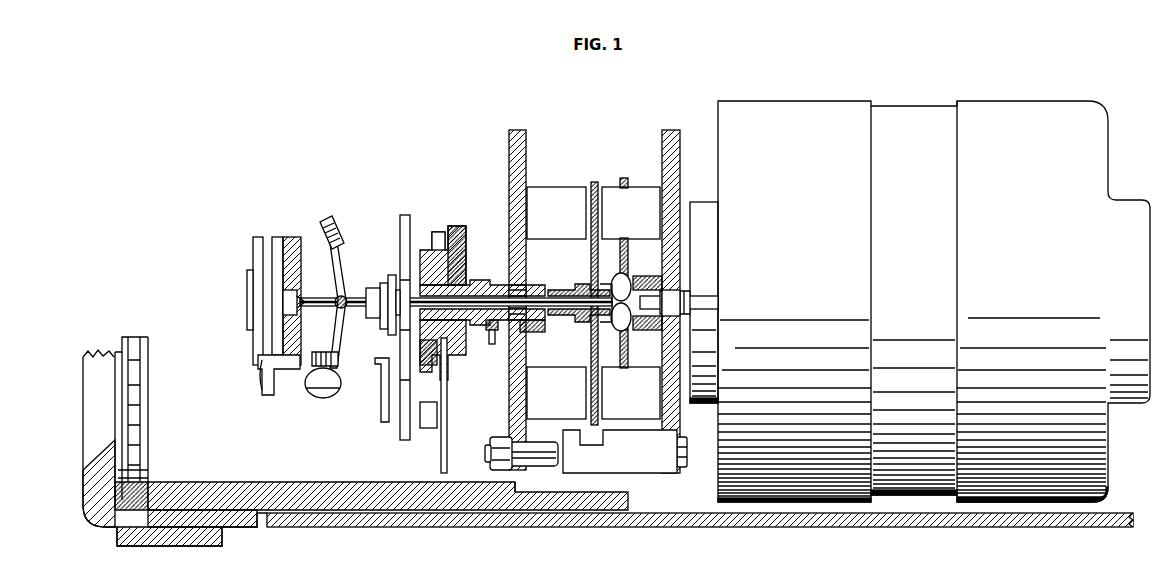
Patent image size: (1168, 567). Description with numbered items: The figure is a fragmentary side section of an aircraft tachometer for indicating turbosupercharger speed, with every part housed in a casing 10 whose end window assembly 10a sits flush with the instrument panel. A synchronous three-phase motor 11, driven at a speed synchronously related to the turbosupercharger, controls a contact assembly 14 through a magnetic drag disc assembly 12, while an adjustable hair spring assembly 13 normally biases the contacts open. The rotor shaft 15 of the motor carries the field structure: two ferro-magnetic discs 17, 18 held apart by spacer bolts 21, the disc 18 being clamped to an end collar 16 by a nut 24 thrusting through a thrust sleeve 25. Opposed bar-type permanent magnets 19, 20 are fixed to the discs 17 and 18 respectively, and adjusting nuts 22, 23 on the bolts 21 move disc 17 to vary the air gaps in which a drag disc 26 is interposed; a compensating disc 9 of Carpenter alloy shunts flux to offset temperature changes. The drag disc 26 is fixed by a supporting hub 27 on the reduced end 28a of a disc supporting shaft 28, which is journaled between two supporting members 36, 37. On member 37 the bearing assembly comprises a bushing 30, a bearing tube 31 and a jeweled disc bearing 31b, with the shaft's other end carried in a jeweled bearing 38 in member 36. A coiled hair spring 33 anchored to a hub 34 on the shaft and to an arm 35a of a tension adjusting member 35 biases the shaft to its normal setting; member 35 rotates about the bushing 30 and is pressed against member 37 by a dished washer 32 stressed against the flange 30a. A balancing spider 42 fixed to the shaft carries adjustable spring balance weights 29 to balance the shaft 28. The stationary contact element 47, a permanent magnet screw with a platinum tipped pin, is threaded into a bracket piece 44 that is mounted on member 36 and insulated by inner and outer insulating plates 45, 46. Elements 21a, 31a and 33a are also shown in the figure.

The compensating disc 9 is at (620, 330).
The casing 10 is at (721, 521).
The end window assembly 10a is at (91, 348).
The synchronous three-phase motor 11 is at (828, 120).
The magnetic drag disc assembly 12 is at (637, 490).
The adjustable hair spring assembly 13 is at (422, 439).
The contact assembly 14 is at (287, 437).
The rotor shaft 15 is at (692, 303).
The end collar 16 is at (682, 340).
The ferro-magnetic disc 17 is at (527, 150).
The ferro-magnetic disc 18 is at (661, 150).
The permanent magnets 19 is at (557, 190).
The permanent magnets 20 is at (644, 188).
The spacer bolts 21 is at (650, 472).
The washer 21a is at (494, 458).
The adjusting nut 22 is at (540, 470).
The adjusting nut 23 is at (504, 472).
The nut 24 is at (630, 325).
The thrust sleeve 25 is at (648, 285).
The drag disc 26 is at (591, 268).
The supporting hub 27 is at (596, 322).
The disc supporting shaft 28 is at (468, 298).
The shaft end 28a is at (571, 300).
The spring balance weight 29 is at (333, 230).
The bushing 30 is at (452, 350).
The flange 30a is at (407, 218).
The bearing tube 31 is at (493, 330).
The block 31a is at (420, 358).
The jeweled disc bearing 31b is at (524, 326).
The dished washer 32 is at (438, 236).
The coiled hair spring 33 is at (410, 378).
The plate 33a is at (386, 283).
The hub 34 is at (373, 318).
The tension adjusting member 35 is at (447, 395).
The arm 35a is at (380, 410).
The supporting member 36 is at (292, 237).
The supporting member 37 is at (458, 232).
The jeweled bearing 38 is at (296, 300).
The balancing spider 42 is at (338, 284).
The bracket piece 44 is at (262, 392).
The inner insulating plate 45 is at (277, 237).
The outer insulating plate 46 is at (258, 237).
The stationary contact element 47 is at (332, 398).